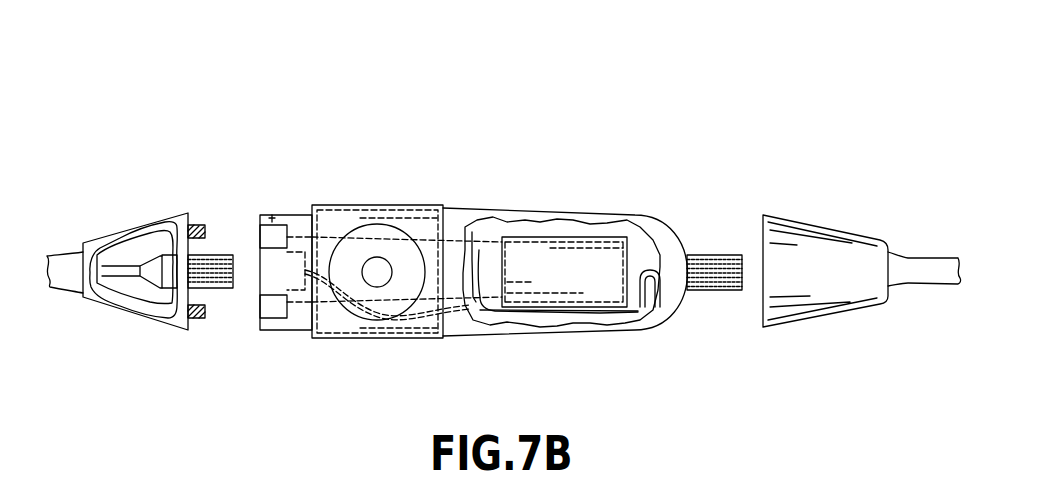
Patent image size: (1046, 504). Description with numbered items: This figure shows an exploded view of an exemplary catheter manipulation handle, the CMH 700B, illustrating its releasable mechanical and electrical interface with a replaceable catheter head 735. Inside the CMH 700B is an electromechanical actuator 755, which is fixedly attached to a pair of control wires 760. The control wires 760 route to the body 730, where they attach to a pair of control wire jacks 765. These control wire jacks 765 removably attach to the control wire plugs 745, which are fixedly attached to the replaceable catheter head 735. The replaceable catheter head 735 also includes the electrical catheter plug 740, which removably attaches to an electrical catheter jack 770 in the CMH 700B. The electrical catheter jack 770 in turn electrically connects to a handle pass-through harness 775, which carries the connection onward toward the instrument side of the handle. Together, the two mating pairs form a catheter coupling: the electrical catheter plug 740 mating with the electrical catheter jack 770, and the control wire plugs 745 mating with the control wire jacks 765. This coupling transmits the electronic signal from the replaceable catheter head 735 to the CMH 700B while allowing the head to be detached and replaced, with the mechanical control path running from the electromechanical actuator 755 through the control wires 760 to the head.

The CMH 700B is at (419, 102).
The replaceable catheter head 735 is at (118, 223).
The control wire plugs 745 is at (200, 224).
The electrical catheter plug 740 is at (213, 290).
The body 730 is at (283, 214).
The control wire jacks 765 is at (273, 214).
The electrical catheter jack 770 is at (306, 258).
The control wires 760 is at (479, 242).
The electromechanical actuator 755 is at (565, 237).
The handle pass-through harness 775 is at (656, 308).